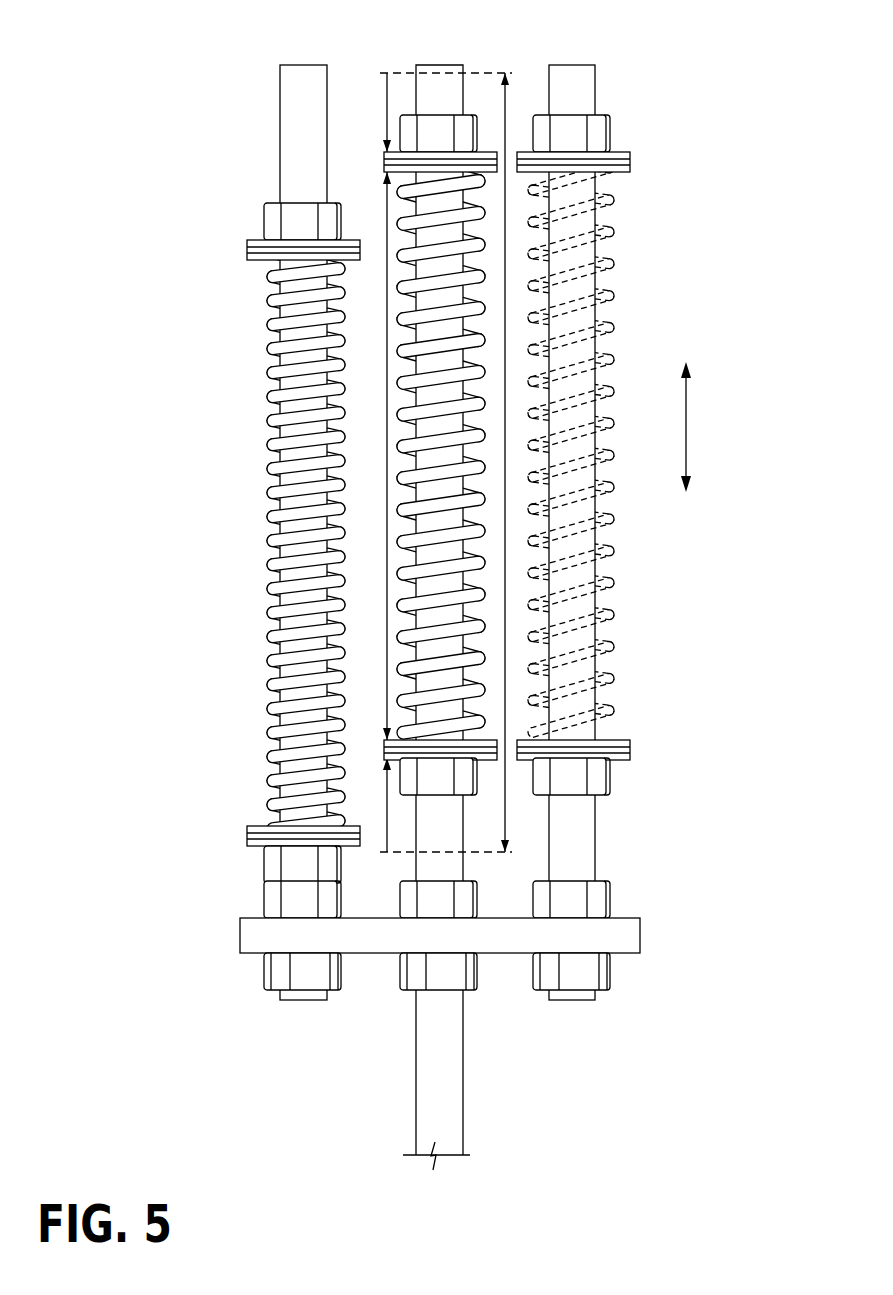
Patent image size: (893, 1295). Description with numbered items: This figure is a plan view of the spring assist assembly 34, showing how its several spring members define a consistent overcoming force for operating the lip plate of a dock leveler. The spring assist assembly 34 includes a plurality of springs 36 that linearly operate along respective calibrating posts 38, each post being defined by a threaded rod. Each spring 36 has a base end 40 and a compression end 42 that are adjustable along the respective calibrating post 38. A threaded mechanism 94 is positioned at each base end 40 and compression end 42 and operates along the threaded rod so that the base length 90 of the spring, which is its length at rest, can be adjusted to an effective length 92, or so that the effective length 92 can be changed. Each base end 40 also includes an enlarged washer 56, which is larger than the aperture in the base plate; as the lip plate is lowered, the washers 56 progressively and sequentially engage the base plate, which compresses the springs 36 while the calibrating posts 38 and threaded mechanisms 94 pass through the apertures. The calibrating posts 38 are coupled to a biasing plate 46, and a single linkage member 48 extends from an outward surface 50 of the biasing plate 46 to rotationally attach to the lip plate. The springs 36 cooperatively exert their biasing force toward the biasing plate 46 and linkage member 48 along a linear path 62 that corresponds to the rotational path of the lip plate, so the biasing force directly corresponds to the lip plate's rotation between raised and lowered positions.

The spring assist assembly 34 is at (240, 371).
The springs 36 is at (264, 551).
The calibrating posts 38 is at (300, 75).
The base end 40 is at (383, 165).
The compression end 42 is at (383, 748).
The biasing plate 46 is at (250, 940).
The linkage member 48 is at (448, 1050).
The outward surface 50 is at (628, 957).
The washer 56 is at (255, 248).
The linear path 62 is at (686, 422).
The base length 90 is at (505, 289).
The effective length 92 is at (385, 223).
The threaded mechanism 94 is at (596, 132).